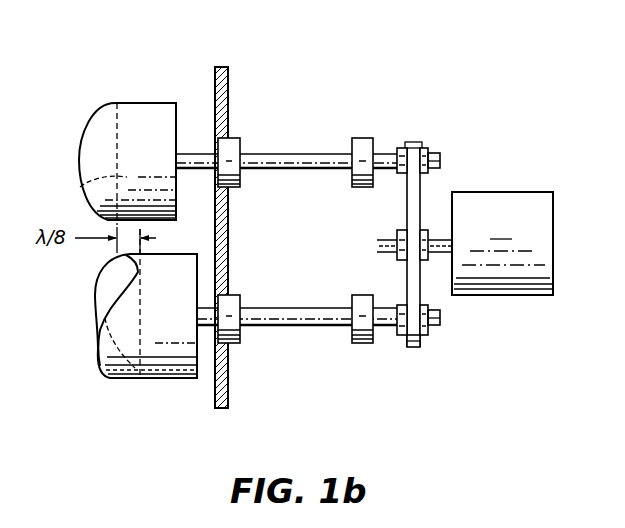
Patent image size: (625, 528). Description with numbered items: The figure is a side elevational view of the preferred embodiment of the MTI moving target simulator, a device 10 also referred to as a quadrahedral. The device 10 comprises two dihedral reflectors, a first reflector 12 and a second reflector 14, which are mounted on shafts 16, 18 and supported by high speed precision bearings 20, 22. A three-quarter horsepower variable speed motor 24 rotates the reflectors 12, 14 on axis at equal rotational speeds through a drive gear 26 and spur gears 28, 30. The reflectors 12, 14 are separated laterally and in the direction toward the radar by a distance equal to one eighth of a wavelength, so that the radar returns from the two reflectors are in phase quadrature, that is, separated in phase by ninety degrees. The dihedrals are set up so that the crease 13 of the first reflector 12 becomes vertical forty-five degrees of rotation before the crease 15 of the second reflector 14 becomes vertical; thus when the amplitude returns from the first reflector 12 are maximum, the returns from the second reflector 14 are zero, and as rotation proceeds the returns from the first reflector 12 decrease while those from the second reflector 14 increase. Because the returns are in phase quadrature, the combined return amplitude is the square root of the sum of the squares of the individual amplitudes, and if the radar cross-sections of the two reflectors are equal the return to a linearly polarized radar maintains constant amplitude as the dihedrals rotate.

The device 10 is at (318, 50).
The first dihedral reflector 12 is at (95, 115).
The crease 13 is at (80, 187).
The second dihedral reflector 14 is at (97, 358).
The crease 15 is at (141, 296).
The shaft 16 is at (300, 170).
The shaft 18 is at (282, 308).
The high speed precision bearing 20 is at (233, 148).
The high speed precision bearing 22 is at (362, 142).
The variable speed motor 24 is at (492, 192).
The drive gear 26 is at (413, 257).
The spur gear 28 is at (415, 143).
The spur gear 30 is at (414, 347).